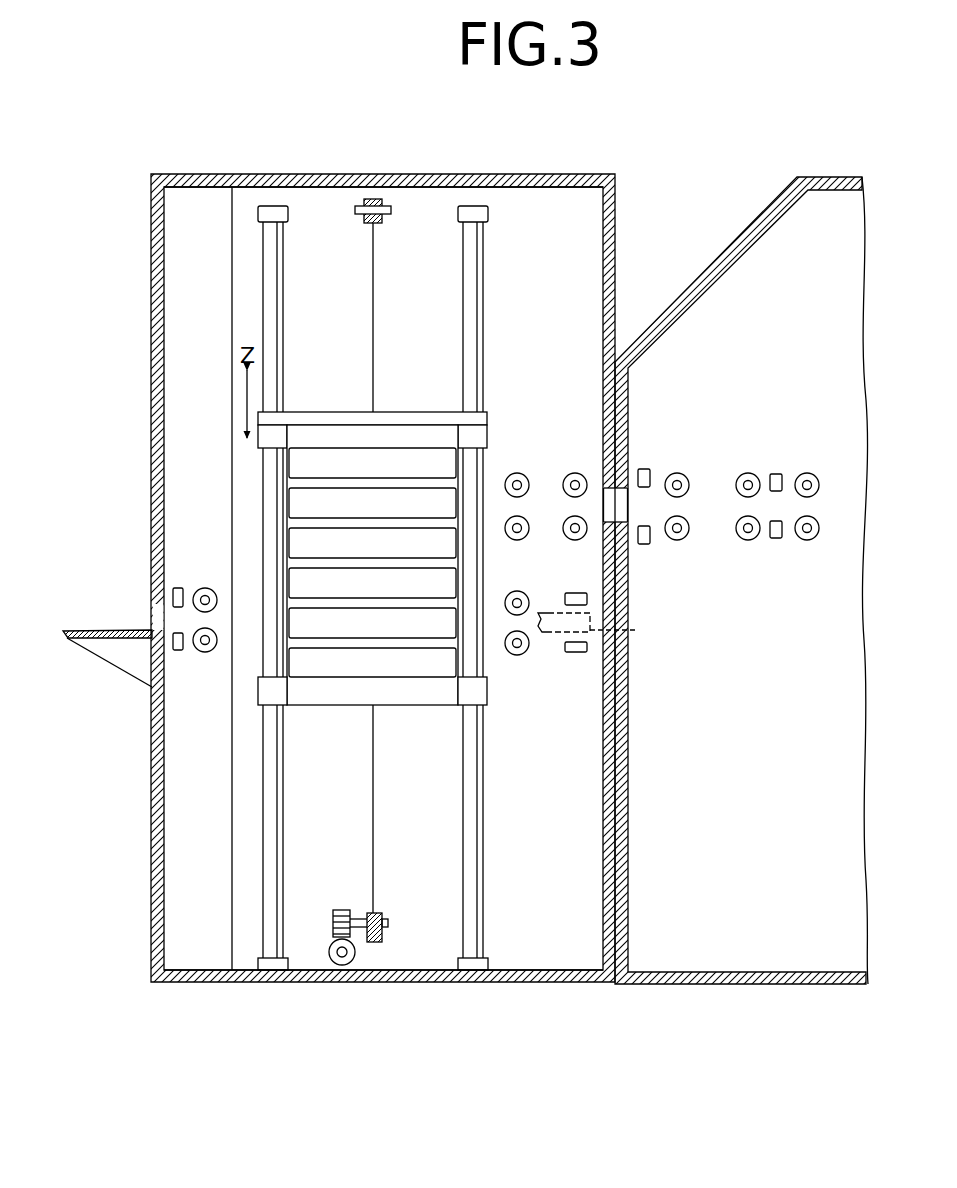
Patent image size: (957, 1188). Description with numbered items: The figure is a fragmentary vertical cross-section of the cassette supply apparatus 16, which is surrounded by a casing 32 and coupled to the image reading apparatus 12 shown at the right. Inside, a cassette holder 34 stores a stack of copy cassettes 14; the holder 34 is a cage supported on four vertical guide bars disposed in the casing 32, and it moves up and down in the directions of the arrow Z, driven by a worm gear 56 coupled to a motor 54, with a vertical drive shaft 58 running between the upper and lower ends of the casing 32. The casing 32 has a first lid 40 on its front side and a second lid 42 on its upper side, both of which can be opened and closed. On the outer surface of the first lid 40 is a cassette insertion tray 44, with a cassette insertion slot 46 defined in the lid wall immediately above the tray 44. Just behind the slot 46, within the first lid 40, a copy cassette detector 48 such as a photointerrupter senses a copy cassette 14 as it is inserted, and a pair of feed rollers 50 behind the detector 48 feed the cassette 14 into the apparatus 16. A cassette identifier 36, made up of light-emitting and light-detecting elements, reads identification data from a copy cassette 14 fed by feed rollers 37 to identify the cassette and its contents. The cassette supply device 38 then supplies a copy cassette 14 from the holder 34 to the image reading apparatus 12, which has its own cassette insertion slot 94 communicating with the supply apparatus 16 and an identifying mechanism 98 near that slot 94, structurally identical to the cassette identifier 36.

The image reading apparatus 12 is at (752, 963).
The copy cassette 14 is at (287, 631).
The cassette supply apparatus 16 is at (145, 928).
The casing 32 is at (497, 978).
The cassette holder 34 is at (407, 717).
The cassette identifier 36 is at (590, 587).
The feed rollers 37 is at (520, 656).
The cassette supply device 38 is at (547, 458).
The first lid 40 is at (202, 197).
The second lid 42 is at (427, 177).
The cassette insertion tray 44 is at (103, 640).
The cassette insertion slot 46 is at (152, 623).
The copy cassette detector 48 is at (178, 588).
The feed rollers 50 is at (205, 588).
The motor 54 is at (367, 982).
The worm gear 56 is at (350, 902).
The screw shaft 58 is at (373, 837).
The cassette insertion slot 94 is at (623, 508).
The identifying mechanism 98 is at (782, 457).